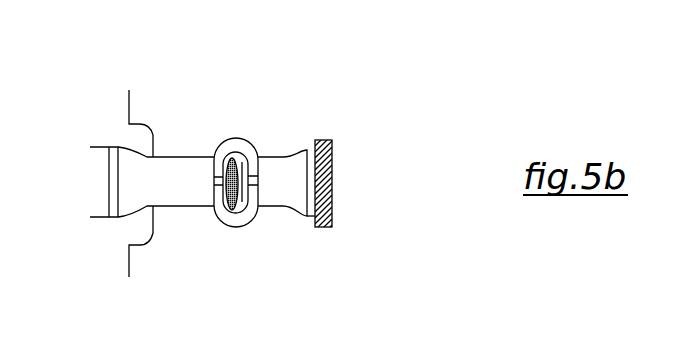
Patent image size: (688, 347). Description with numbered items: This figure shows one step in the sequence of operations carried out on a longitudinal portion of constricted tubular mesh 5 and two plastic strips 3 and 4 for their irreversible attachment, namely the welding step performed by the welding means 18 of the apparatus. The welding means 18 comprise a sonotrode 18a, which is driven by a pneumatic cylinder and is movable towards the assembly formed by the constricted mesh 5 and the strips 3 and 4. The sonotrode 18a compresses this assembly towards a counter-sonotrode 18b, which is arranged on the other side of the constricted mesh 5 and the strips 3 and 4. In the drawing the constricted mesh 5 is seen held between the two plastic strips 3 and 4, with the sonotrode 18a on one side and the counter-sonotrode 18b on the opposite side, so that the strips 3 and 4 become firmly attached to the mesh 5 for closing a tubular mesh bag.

The plastic strip 3 is at (243, 170).
The plastic strip 4 is at (233, 142).
The tubular mesh 5 is at (227, 160).
The welding means 18 is at (100, 147).
The sonotrode 18a is at (205, 197).
The counter-sonotrode 18b is at (293, 200).